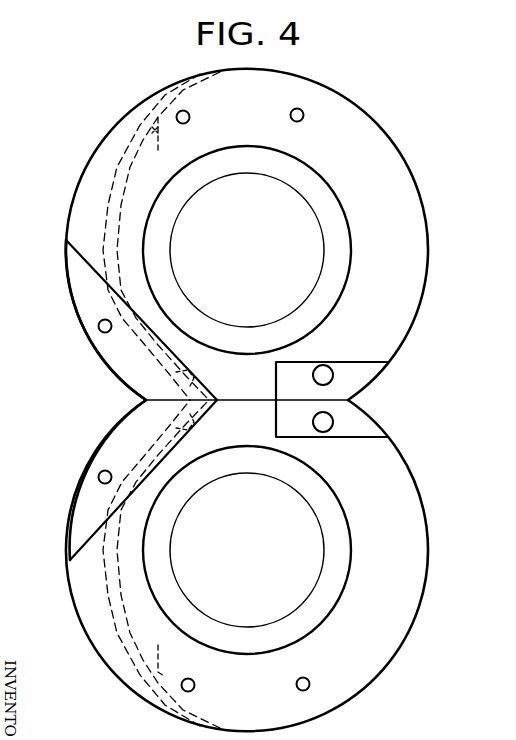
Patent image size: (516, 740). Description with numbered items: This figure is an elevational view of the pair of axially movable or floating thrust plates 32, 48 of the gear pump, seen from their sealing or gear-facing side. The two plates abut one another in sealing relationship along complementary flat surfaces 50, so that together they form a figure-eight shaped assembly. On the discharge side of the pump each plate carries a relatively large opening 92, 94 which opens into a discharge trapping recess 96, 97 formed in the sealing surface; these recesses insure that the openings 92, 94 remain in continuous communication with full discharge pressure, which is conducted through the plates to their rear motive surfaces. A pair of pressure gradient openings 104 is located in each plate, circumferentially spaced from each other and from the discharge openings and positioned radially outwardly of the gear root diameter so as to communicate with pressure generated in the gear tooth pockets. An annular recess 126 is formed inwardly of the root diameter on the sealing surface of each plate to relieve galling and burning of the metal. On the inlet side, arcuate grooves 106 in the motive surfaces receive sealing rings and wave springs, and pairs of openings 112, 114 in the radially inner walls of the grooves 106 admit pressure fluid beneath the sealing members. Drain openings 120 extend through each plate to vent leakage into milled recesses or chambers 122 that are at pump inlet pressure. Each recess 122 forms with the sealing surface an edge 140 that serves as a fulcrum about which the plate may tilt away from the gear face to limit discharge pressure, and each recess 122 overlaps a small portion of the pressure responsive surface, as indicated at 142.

The floating thrust plate 32 is at (420, 247).
The floating thrust plate 48 is at (421, 555).
The complementary flat surfaces 50 is at (338, 395).
The discharge pressure opening 92 is at (323, 365).
The discharge pressure opening 94 is at (330, 430).
The discharge trapping recess 96 is at (363, 373).
The discharge trapping recess 97 is at (368, 425).
The pressure gradient openings 104 is at (190, 118).
The arcuate grooves 106 is at (125, 143).
The openings 112 is at (158, 145).
The openings 114 is at (157, 650).
The drain openings 120 is at (98, 326).
The chambers 122 is at (120, 363).
The annular recess 126 is at (336, 257).
The edge 140 is at (79, 261).
The overlap portion 142 is at (183, 360).